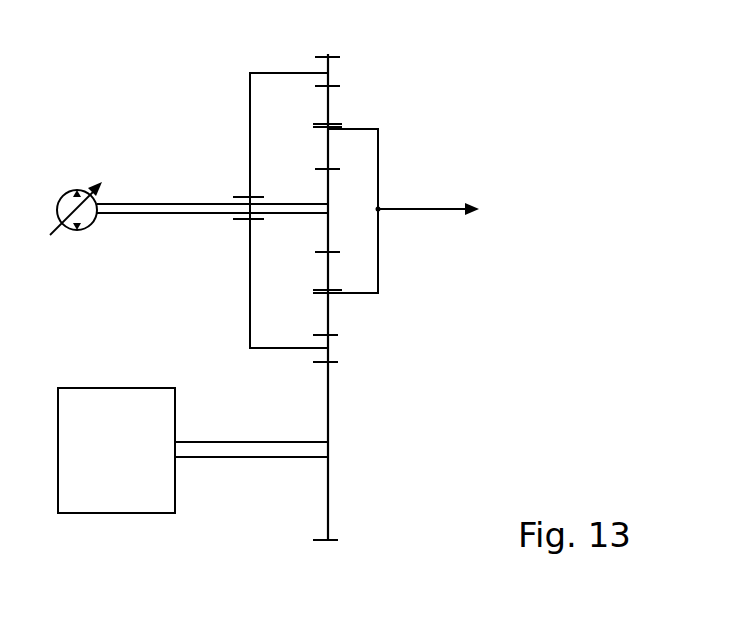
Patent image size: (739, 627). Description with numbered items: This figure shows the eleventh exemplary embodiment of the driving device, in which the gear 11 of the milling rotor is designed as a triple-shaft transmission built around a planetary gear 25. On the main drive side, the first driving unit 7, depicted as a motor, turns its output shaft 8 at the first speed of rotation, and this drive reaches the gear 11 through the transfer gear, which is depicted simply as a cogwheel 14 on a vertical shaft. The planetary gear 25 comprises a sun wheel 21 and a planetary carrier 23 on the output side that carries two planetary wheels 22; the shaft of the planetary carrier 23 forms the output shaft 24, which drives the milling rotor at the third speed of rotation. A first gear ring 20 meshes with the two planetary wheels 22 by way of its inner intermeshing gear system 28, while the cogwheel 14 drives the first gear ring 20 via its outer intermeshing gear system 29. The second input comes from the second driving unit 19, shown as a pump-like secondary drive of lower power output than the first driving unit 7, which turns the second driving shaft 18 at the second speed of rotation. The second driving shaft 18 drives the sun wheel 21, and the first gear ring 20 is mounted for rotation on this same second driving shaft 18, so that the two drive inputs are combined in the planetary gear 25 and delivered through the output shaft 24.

The first driving unit 7 is at (95, 508).
The output shaft 8 is at (217, 450).
The gear 11 is at (172, 262).
The cogwheel 14 is at (328, 495).
The second driving shaft 18 is at (167, 210).
The second driving unit 19 is at (68, 202).
The first gear ring 20 is at (248, 297).
The sun wheel 21 is at (330, 187).
The planetary wheels 22 is at (329, 110).
The planetary carrier 23 is at (379, 152).
The output shaft 24 is at (410, 209).
The planetary gear 25 is at (502, 347).
The inner intermeshing gear system 28 is at (332, 85).
The outer intermeshing gear system 29 is at (332, 362).